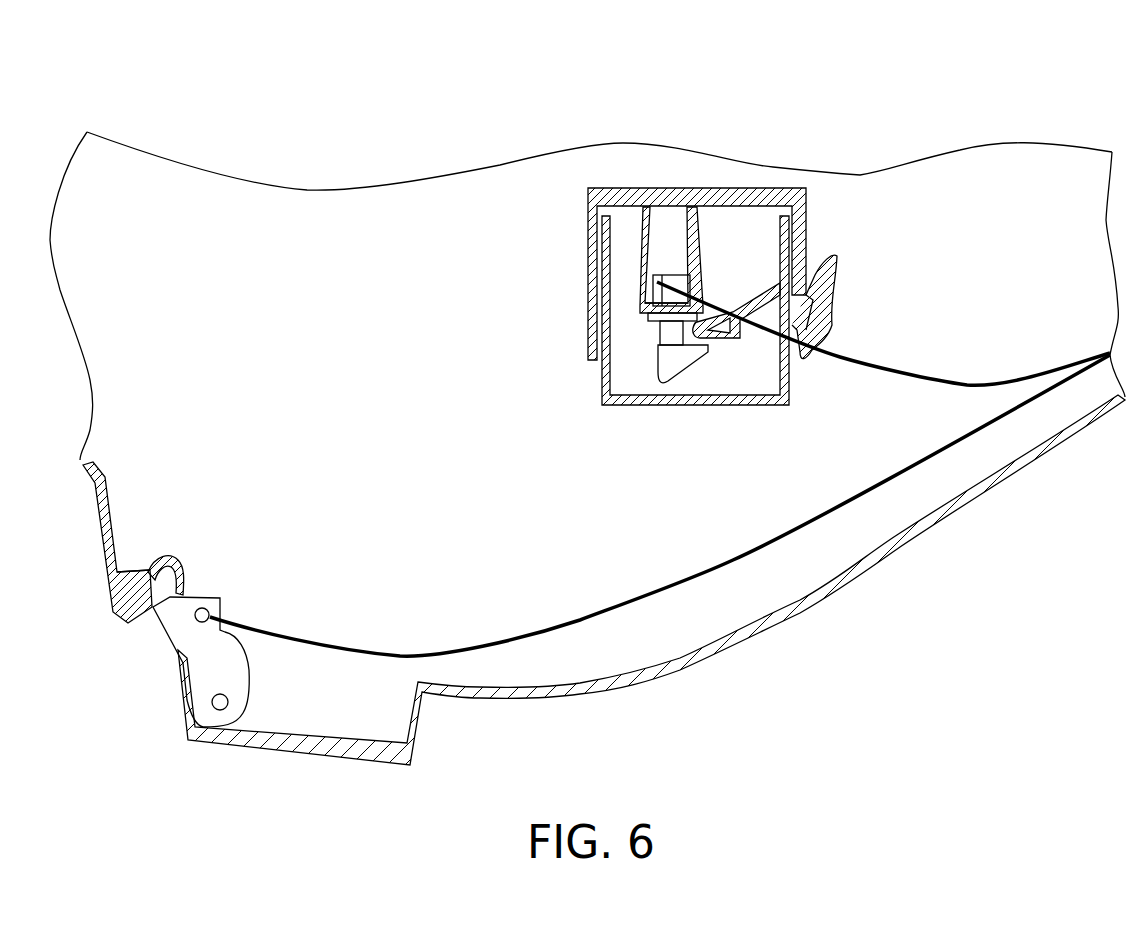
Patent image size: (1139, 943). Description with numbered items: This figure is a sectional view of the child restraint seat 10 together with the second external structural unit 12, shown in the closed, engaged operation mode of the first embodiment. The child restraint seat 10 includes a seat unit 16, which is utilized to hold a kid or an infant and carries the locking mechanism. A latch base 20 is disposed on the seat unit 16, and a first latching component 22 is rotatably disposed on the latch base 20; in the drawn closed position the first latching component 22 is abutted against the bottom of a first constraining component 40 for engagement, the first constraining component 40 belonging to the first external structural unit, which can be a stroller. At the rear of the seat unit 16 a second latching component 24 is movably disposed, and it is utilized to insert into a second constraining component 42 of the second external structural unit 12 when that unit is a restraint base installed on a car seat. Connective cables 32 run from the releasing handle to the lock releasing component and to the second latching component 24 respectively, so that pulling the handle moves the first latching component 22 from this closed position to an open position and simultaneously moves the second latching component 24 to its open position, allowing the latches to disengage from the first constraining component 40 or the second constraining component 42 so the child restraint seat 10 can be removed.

The child restraint seat 10 is at (245, 85).
The second external structural unit 12 is at (805, 198).
The seat unit 16 is at (368, 215).
The latch base 20 is at (697, 215).
The first latching component 22 is at (667, 332).
The second latching component 24 is at (240, 673).
The connective cables 32 is at (963, 383).
The first constraining component 40 is at (725, 340).
The second constraining component 42 is at (170, 568).